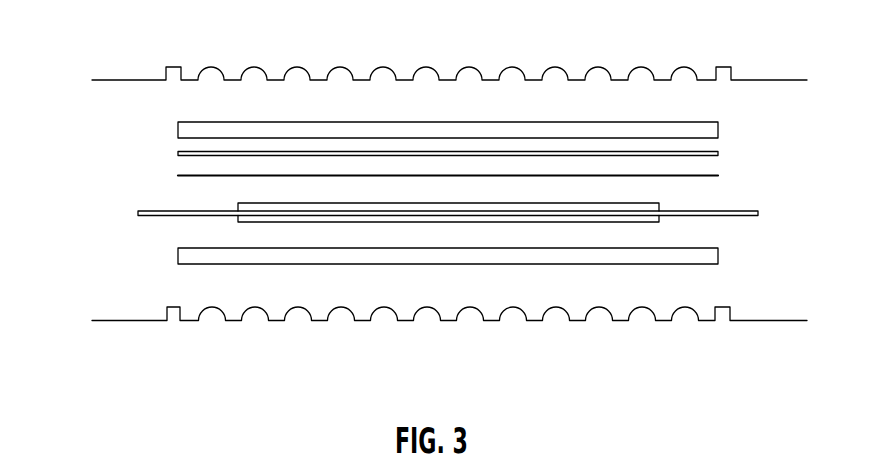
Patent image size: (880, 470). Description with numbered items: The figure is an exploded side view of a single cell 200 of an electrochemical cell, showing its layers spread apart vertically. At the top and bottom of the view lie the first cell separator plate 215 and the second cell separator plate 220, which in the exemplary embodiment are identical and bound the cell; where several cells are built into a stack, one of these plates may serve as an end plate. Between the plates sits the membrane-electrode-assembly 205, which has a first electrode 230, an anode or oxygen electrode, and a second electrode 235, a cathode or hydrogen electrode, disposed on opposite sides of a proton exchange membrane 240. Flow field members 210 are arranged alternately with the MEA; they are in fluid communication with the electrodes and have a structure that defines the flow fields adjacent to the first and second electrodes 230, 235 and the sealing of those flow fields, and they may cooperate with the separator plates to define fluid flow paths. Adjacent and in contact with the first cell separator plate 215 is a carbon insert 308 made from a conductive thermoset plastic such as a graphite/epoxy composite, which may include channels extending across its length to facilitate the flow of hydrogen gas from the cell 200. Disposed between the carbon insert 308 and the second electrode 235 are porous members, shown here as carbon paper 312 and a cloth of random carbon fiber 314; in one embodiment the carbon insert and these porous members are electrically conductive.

The cell 200 is at (150, 49).
The membrane-electrode-assembly 205 is at (105, 213).
The flow field member 210 is at (448, 197).
The first cell separator plate 215 is at (768, 78).
The second cell separator plate 220 is at (768, 322).
The first electrode 230 is at (250, 222).
The second electrode 235 is at (252, 203).
The proton exchange membrane 240 is at (735, 211).
The carbon insert 308 is at (240, 122).
The carbon paper 312 is at (193, 175).
The cloth of random carbon fiber 314 is at (190, 152).